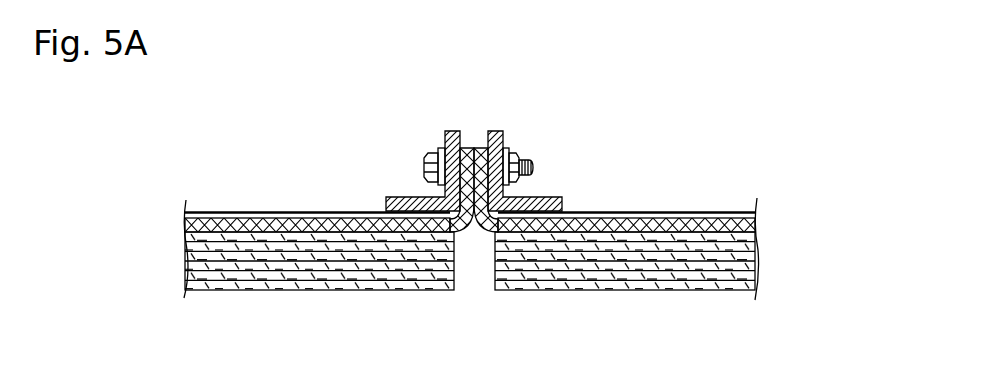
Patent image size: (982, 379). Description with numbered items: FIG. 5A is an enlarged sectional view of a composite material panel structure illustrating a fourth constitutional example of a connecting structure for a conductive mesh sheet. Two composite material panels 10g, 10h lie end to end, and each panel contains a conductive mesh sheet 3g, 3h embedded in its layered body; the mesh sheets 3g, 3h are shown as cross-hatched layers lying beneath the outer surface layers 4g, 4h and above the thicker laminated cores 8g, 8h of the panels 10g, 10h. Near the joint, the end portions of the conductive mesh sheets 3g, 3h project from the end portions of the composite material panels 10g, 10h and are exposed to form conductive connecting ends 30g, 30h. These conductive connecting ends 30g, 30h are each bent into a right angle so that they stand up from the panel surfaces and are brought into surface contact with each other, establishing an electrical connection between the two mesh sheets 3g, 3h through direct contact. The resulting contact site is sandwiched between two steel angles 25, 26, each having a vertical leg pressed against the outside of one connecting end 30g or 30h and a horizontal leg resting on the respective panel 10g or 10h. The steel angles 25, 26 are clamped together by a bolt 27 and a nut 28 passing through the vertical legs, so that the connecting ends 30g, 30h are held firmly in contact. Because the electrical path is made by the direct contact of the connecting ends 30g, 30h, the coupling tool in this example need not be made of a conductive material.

The composite material panel 10g is at (313, 233).
The composite material panel 10h is at (627, 225).
The surface layer of first panel 4g is at (272, 211).
The surface layer of second panel 4h is at (655, 211).
The conductive mesh sheet 3g is at (302, 223).
The conductive mesh sheet 3h is at (625, 214).
The core of first panel 8g is at (318, 273).
The core of second panel 8h is at (640, 274).
The conductive connecting end 30g is at (467, 148).
The conductive connecting end 30h is at (481, 148).
The steel angle 25 is at (445, 132).
The steel angle 26 is at (497, 132).
The bolt 27 is at (424, 152).
The nut 28 is at (517, 150).